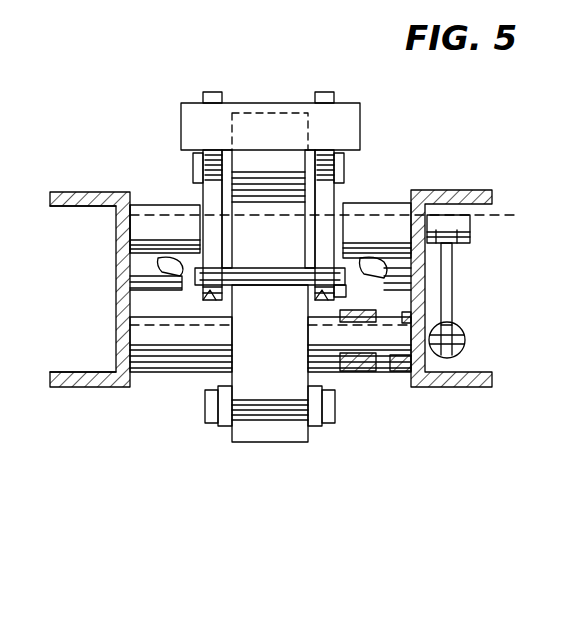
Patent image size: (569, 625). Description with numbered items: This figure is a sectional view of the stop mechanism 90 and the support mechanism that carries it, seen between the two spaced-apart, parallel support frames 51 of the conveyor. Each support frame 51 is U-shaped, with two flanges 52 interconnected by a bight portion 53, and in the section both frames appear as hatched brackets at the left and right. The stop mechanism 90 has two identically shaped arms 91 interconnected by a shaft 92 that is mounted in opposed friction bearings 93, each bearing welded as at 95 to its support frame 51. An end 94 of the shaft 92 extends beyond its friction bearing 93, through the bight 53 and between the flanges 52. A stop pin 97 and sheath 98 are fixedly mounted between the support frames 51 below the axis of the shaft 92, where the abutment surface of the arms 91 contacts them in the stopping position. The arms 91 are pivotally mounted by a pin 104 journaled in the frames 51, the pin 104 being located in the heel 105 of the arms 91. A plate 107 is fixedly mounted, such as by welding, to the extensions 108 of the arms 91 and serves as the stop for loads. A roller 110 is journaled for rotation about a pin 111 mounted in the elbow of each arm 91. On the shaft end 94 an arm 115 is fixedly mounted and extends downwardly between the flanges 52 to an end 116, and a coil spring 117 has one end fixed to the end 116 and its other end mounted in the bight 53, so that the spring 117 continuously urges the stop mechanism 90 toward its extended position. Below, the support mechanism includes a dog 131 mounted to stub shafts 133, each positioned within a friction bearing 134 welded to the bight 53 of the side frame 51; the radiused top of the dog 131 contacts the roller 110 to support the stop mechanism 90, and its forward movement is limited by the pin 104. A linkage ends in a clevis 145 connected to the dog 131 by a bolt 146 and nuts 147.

The support frame 51 is at (84, 190).
The flange 52 is at (80, 206).
The bight portion 53 is at (140, 279).
The stop mechanism 90 is at (378, 150).
The arm 91 is at (205, 298).
The shaft 92 is at (357, 213).
The friction bearing 93 is at (160, 205).
The end of the shaft 94 is at (472, 232).
The weld 95 is at (134, 205).
The stop pin 97 is at (405, 272).
The sheath 98 is at (370, 278).
The pin 104 is at (275, 283).
The heel 105 is at (222, 300).
The plate 107 is at (362, 112).
The extension 108 is at (230, 75).
The roller 110 is at (270, 110).
The pin 111 is at (198, 158).
The arm 115 is at (454, 268).
The end 116 is at (466, 343).
The coil spring 117 is at (455, 330).
The dog 131 is at (238, 374).
The stub shaft 133 is at (350, 350).
The friction bearing 134 is at (395, 372).
The clevis 145 is at (228, 426).
The bolt 146 is at (216, 422).
The nut 147 is at (330, 426).